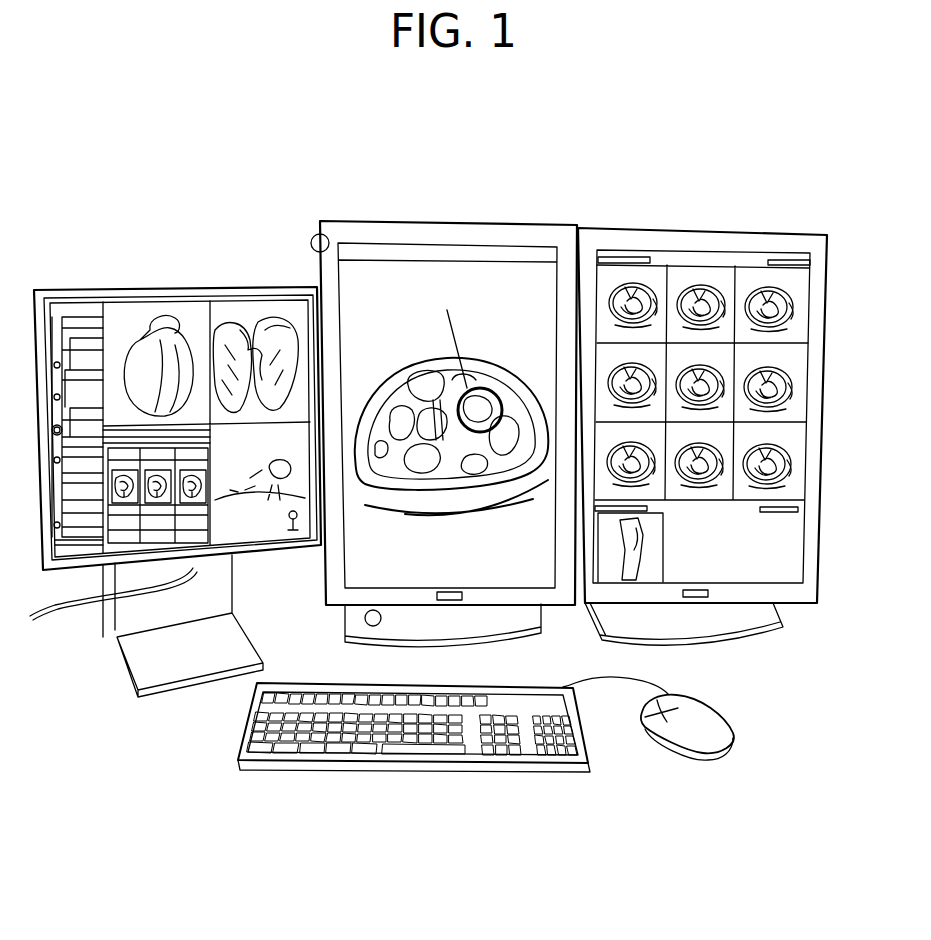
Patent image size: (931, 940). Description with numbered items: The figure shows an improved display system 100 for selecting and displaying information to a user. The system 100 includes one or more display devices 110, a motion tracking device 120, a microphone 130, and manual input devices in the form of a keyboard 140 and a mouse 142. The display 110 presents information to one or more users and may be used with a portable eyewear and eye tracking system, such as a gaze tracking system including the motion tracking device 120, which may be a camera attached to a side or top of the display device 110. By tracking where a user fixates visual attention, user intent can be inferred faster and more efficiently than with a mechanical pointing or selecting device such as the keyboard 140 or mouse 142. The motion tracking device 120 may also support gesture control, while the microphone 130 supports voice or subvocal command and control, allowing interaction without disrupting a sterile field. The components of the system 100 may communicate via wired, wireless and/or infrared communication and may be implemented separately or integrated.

The display system 100 is at (170, 200).
The display 110 is at (70, 323).
The motion tracking device 120 is at (310, 243).
The microphone 130 is at (345, 622).
The keyboard 140 is at (422, 773).
The mouse 142 is at (703, 722).